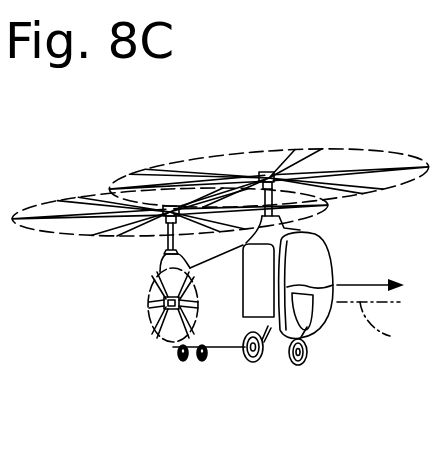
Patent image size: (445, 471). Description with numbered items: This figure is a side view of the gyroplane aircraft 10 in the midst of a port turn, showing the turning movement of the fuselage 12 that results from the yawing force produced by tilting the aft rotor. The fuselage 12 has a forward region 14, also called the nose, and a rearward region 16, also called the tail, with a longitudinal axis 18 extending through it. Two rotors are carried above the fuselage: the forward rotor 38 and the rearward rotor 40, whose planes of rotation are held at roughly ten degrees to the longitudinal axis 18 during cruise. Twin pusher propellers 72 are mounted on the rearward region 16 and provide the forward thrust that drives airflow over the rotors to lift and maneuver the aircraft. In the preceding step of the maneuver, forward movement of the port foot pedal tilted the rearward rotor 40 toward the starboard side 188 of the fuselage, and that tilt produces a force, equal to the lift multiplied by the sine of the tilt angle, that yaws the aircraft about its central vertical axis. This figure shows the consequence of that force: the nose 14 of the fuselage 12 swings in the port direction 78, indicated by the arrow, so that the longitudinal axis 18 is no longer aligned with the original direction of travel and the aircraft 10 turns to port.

The aircraft 10 is at (322, 80).
The fuselage 12 is at (278, 360).
The forward region 14 is at (310, 267).
The rearward region 16 is at (150, 260).
The longitudinal axis 18 is at (390, 336).
The forward rotor 38 is at (386, 138).
The rearward rotor 40 is at (68, 187).
The twin pusher propellers 72 is at (150, 318).
The port direction 78 is at (376, 283).
The starboard side 188 is at (218, 290).